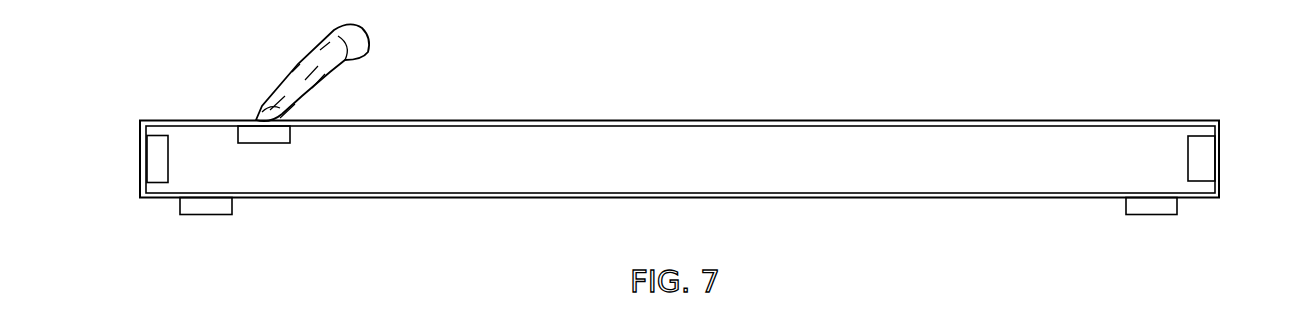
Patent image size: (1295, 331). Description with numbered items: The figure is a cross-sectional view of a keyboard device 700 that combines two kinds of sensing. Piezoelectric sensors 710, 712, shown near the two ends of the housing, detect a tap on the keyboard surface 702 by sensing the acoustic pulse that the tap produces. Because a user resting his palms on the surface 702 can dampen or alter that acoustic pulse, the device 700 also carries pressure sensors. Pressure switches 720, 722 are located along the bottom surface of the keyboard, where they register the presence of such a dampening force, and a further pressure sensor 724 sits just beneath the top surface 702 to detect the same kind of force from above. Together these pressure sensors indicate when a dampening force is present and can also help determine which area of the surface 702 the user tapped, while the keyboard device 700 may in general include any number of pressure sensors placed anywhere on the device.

The keyboard device 700 is at (599, 80).
The keyboard surface 702 is at (1018, 121).
The piezoelectric sensor 710 is at (156, 158).
The piezoelectric sensor 712 is at (1200, 143).
The pressure sensor 720 is at (213, 207).
The pressure sensor 722 is at (1150, 207).
The pressure sensor 724 is at (263, 132).